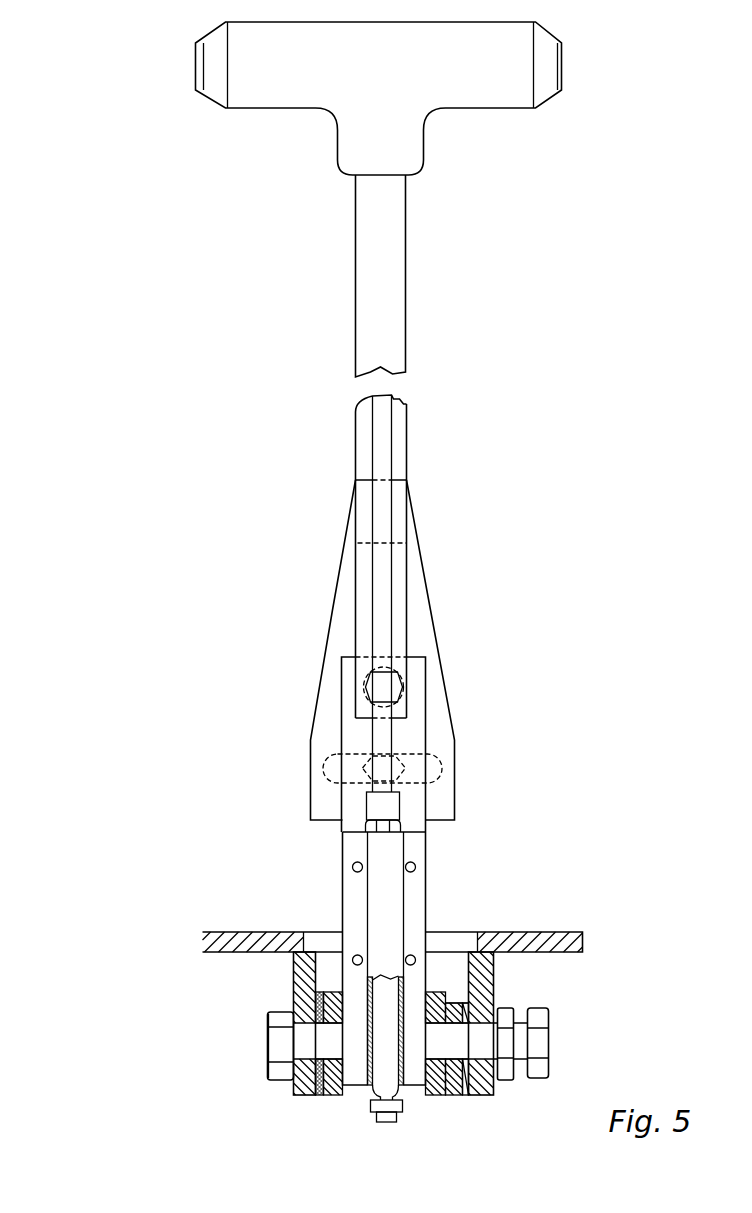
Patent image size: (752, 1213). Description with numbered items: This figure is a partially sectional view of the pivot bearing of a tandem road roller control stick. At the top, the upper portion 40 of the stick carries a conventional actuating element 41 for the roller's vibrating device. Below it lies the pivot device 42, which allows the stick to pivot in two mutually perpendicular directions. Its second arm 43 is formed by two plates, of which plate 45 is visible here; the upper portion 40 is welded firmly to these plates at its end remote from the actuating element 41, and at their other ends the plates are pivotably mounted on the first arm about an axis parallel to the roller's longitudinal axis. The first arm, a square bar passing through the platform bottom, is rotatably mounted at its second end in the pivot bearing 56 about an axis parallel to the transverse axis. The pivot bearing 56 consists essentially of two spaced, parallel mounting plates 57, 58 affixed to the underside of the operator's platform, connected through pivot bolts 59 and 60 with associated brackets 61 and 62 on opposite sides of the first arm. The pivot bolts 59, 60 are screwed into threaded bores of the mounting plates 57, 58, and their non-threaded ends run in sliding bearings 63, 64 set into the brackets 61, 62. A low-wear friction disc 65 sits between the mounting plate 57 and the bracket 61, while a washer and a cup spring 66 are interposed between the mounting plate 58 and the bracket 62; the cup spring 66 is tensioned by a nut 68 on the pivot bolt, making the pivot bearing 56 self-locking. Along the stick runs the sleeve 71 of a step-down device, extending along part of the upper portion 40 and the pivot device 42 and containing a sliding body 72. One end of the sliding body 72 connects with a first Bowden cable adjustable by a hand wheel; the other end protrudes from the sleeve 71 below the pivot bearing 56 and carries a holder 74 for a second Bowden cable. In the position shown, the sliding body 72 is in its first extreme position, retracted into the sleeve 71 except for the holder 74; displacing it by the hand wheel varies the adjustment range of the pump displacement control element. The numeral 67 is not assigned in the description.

The upper portion 40 is at (397, 323).
The actuating element 41 is at (278, 102).
The pivot device 42 is at (100, 806).
The second arm 43 is at (465, 733).
The plate 45 is at (415, 688).
The pivot bearing 56 is at (312, 1118).
The mounting plate 57 is at (298, 1083).
The mounting plate 58 is at (485, 972).
The pivot bolt 59 is at (275, 1038).
The pivot bolt 60 is at (543, 1055).
The bracket 61 is at (343, 1092).
The bracket 62 is at (438, 1096).
The sliding bearing 63 is at (315, 1008).
The sliding bearing 64 is at (463, 1008).
The friction disc 65 is at (277, 1060).
The cup spring 66 is at (452, 1096).
The washer 67 is at (468, 1095).
The nut 68 is at (503, 1073).
The sleeve 71 is at (392, 908).
The sliding body 72 is at (372, 1087).
The holder 74 is at (388, 1113).